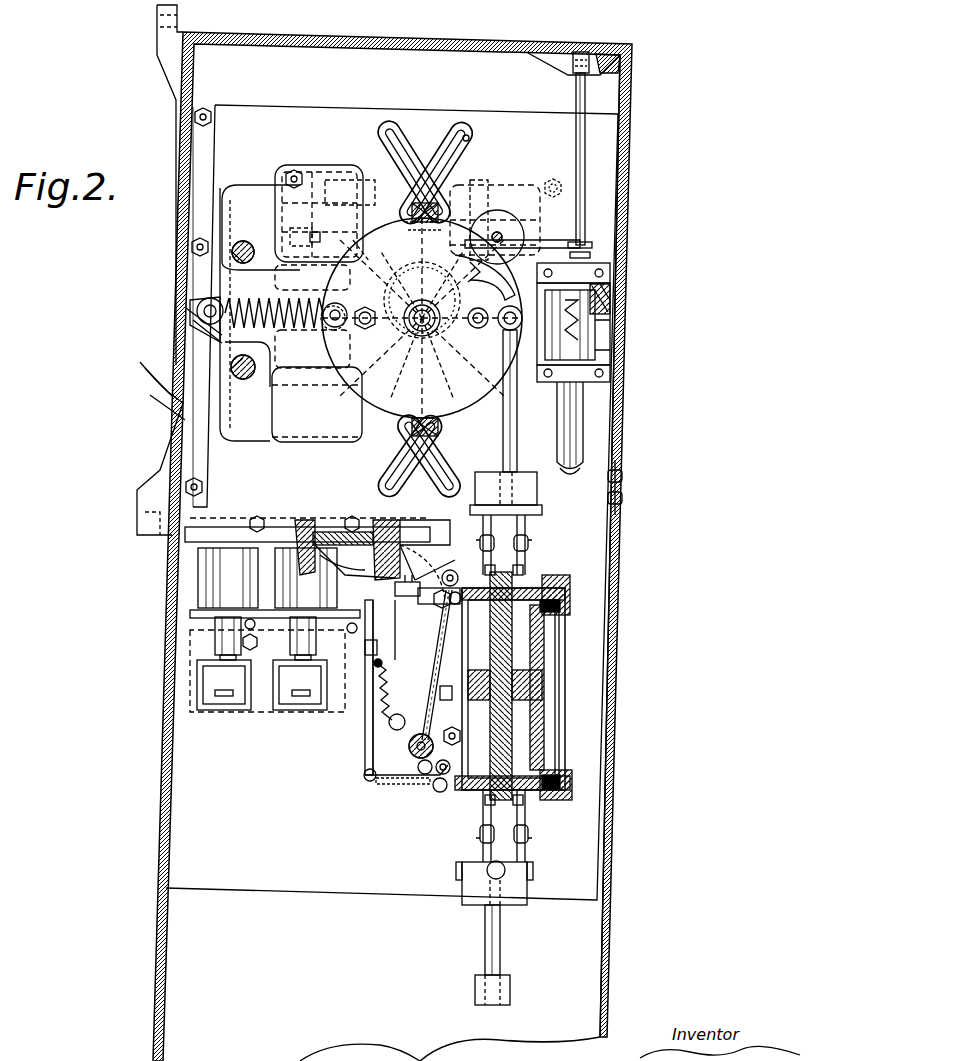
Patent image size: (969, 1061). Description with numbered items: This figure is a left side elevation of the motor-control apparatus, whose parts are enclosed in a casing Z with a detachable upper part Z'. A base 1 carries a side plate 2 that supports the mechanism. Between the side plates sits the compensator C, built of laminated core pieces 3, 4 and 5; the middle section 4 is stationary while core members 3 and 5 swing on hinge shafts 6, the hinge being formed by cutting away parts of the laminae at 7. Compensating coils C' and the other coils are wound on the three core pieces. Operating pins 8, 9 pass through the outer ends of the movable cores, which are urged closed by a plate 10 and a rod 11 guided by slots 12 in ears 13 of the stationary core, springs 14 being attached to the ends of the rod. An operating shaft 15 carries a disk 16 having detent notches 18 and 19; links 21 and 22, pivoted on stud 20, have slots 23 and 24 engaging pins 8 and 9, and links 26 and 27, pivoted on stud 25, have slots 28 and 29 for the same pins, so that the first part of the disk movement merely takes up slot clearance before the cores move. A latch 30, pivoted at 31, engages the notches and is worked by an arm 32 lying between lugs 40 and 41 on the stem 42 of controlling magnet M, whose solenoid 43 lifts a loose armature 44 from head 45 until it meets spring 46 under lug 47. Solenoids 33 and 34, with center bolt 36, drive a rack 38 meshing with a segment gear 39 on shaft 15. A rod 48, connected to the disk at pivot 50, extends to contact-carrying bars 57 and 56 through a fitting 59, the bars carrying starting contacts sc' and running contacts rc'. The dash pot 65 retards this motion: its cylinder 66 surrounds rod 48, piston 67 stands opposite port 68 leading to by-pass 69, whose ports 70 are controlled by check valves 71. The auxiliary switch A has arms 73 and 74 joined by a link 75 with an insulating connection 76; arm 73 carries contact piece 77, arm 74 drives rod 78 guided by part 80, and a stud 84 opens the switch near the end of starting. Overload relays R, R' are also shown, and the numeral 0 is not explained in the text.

The base 1 is at (190, 237).
The side plate 2 is at (308, 110).
The core piece 3 is at (272, 235).
The core piece 4 is at (220, 290).
The core piece 5 is at (262, 425).
The hinge shaft 6 is at (235, 248).
The cut-away part of laminae 7 is at (230, 255).
The operating pin 8 is at (440, 212).
The operating pin 9 is at (402, 430).
The plate 10 is at (222, 188).
The rod 11 is at (205, 316).
The slot 12 is at (205, 310).
The ear 13 is at (212, 322).
The spring 14 is at (150, 373).
The operating shaft 15 is at (422, 328).
The disk 16 is at (458, 398).
The detent notch 18 is at (485, 279).
The detent notch 19 is at (355, 240).
The stud 20 is at (475, 328).
The link 21 is at (396, 125).
The link 22 is at (380, 492).
The slot 23 is at (405, 148).
The slot 24 is at (385, 486).
The stud 25 is at (370, 328).
The link 26 is at (464, 128).
The link 27 is at (452, 480).
The slot 28 is at (478, 142).
The slot 29 is at (430, 478).
The latch 30 is at (495, 222).
The pivot 31 is at (500, 234).
The latch arm 32 is at (548, 239).
The solenoid 33 is at (345, 182).
The solenoid 34 is at (516, 190).
The center bolt 36 is at (301, 224).
The rack 38 is at (470, 272).
The segment gear 39 is at (422, 300).
The lug 40 is at (585, 264).
The lug 41 is at (586, 243).
The controlling magnet stem 42 is at (579, 184).
The controlling solenoid 43 is at (606, 298).
The armature 44 is at (575, 414).
The head 45 is at (618, 476).
The spring 46 is at (605, 357).
The lug 47 is at (610, 337).
The rod 48 is at (503, 412).
The pivot point 50 is at (508, 332).
The insulating contact carrying bar 56 is at (515, 895).
The insulating contact carrying bar 57 is at (530, 488).
The fitting 59 is at (495, 988).
The dash pot 65 is at (565, 700).
The cylinder 66 is at (548, 650).
The piston 67 is at (542, 706).
The port 68 is at (540, 672).
The by-pass 69 is at (548, 628).
The port 70 is at (540, 610).
The check valve 71 is at (556, 606).
The arm 73 is at (452, 585).
The arm 74 is at (400, 778).
The link 75 is at (440, 635).
The insulating connection 76 is at (424, 755).
The contact piece 77 is at (420, 580).
The rod 78 is at (366, 730).
The guide part 80 is at (368, 650).
The stud 84 is at (447, 700).
The connector 0 is at (400, 540).
The auxiliary switch A is at (400, 748).
The compensator C is at (319, 200).
The compensating coil C' is at (314, 202).
The controlling magnet M is at (591, 324).
The overload relay R is at (281, 613).
The overload relay R' is at (291, 614).
The casing Z is at (376, 546).
The detachable upper part of casing Z' is at (633, 546).
The running contact rc' is at (524, 543).
The starting contact sc' is at (531, 555).